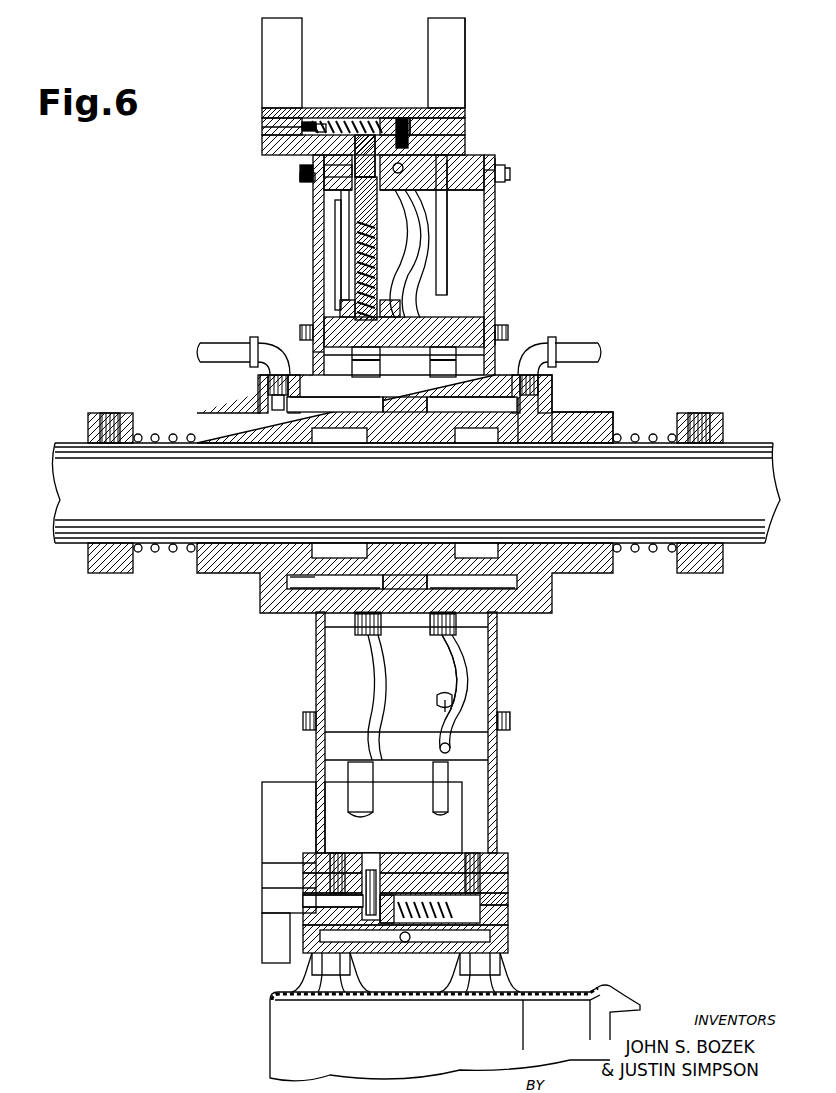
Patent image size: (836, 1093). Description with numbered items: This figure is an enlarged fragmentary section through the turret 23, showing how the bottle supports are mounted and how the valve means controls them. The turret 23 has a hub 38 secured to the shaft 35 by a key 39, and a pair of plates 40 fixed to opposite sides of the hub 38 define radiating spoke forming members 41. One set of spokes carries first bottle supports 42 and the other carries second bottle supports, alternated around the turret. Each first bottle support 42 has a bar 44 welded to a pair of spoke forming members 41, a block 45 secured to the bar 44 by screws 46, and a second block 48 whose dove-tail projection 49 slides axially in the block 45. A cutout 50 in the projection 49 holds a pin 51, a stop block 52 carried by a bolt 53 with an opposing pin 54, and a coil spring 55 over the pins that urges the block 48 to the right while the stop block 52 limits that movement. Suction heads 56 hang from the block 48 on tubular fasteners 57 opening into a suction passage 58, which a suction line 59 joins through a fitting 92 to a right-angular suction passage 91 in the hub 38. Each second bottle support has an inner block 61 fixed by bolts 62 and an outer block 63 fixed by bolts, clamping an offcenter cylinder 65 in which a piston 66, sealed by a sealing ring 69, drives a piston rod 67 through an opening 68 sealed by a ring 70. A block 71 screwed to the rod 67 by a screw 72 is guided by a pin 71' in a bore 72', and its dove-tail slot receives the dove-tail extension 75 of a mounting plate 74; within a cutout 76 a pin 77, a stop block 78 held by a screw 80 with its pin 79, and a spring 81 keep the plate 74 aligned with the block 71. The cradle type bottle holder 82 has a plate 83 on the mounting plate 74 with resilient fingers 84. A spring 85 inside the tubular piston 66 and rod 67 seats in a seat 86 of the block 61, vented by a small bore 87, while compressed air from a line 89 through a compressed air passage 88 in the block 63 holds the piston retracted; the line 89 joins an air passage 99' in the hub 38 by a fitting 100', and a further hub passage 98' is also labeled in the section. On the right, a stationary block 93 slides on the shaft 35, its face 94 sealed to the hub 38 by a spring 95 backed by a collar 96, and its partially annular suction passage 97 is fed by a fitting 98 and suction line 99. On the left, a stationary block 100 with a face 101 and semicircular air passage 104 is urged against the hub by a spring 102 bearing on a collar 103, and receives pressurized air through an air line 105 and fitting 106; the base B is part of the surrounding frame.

The resilient fingers 84 is at (290, 45).
The cradle type bottle holder 82 is at (468, 70).
The plate 83 is at (455, 108).
The dove-tail extension 75 is at (462, 126).
The screw 80 is at (410, 128).
The outer block 63 is at (490, 155).
The mounting plate 74 is at (262, 112).
The pin 77 is at (308, 127).
The spring 81 is at (324, 130).
The screw 72 is at (358, 133).
The cutout 76 is at (358, 128).
The pin 79 is at (398, 163).
The stop block 78 is at (404, 128).
The block 71 is at (341, 150).
The opening 68 is at (352, 165).
The sealing ring 70 is at (345, 177).
The piston rod 67 is at (341, 200).
The offcenter cylinder 65 is at (335, 240).
The spring 85 is at (360, 265).
The bolts 62 is at (305, 330).
The air line 105 is at (222, 343).
The fitting 106 is at (268, 352).
The small bore 87 is at (330, 352).
The seat 86 is at (400, 355).
The compressed air passage 88 is at (437, 200).
The pin 71' is at (461, 436).
The bore 72' is at (482, 449).
The compressed air line 89 is at (400, 240).
The piston 66 is at (390, 310).
The sealing ring 69 is at (400, 318).
The inner block 61 is at (484, 322).
The turret 23 is at (505, 340).
The suction passage 97 is at (528, 372).
The suction line 99 is at (582, 335).
The fitting 98 is at (553, 362).
The collar 96 is at (715, 420).
The spring 95 is at (640, 435).
The shaft 35 is at (745, 440).
The air passage 104 is at (270, 405).
The fitting 100' is at (395, 530).
The passage 98' is at (335, 437).
The key 39 is at (368, 436).
The suction passage 91 is at (445, 412).
The face 94 is at (488, 433).
The block 93 is at (590, 412).
The face 101 is at (320, 560).
The air passage 99' is at (347, 545).
The hub 38 is at (420, 560).
The collar 103 is at (105, 573).
The spring 102 is at (155, 552).
The block 100 is at (402, 495).
The plates 40 is at (320, 620).
The fitting 92 is at (456, 632).
The suction line 59 is at (445, 660).
The spoke forming members 41 is at (318, 755).
The first bottle supports 42 is at (505, 852).
The screws 46 is at (337, 855).
The bolt 53 is at (372, 860).
The pin 54 is at (395, 880).
The coil spring 55 is at (425, 900).
The bar 44 is at (508, 866).
The block 45 is at (508, 884).
The dove-tail projection 49 is at (508, 899).
The stop block 52 is at (350, 905).
The pin 51 is at (508, 912).
The second block 48 is at (508, 947).
The cutout 50 is at (435, 930).
The suction passage 58 is at (385, 942).
The suction heads 56 is at (348, 968).
The tubular fastener 57 is at (325, 995).
The base B is at (565, 990).